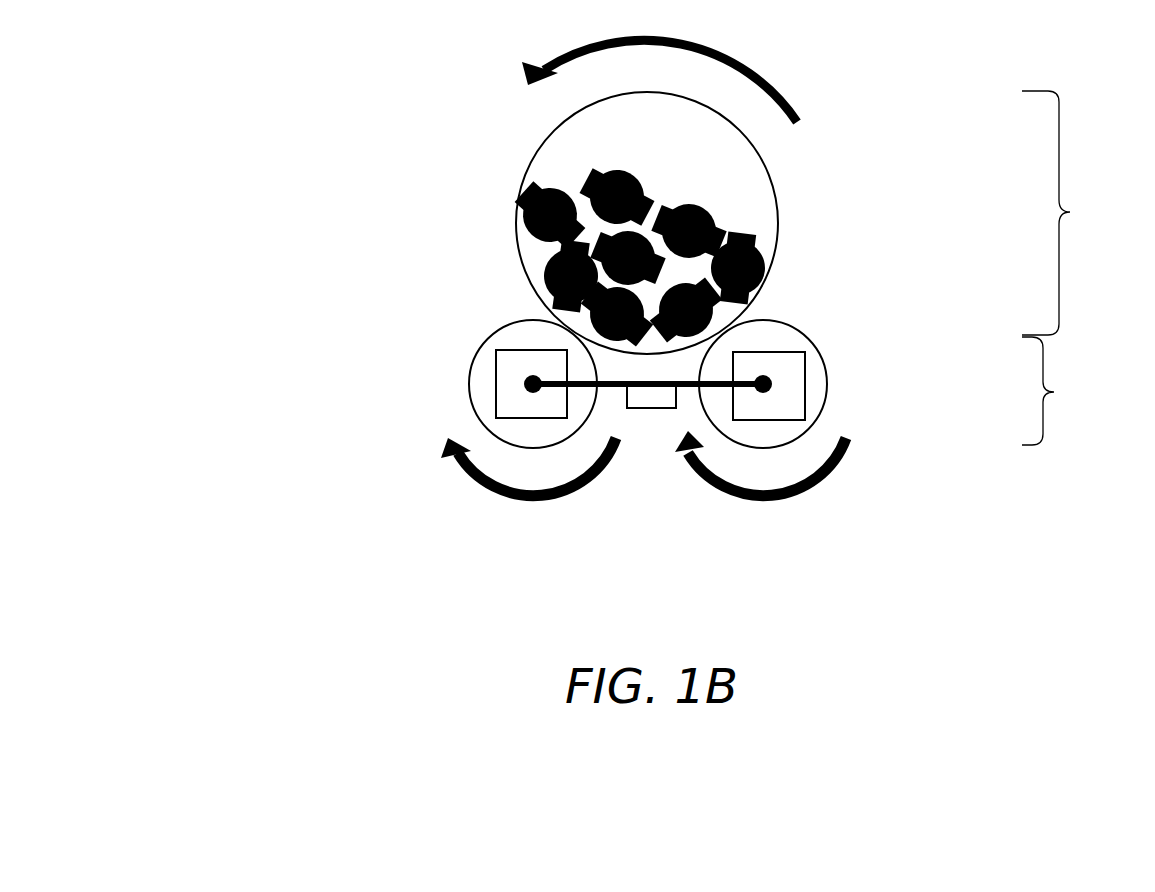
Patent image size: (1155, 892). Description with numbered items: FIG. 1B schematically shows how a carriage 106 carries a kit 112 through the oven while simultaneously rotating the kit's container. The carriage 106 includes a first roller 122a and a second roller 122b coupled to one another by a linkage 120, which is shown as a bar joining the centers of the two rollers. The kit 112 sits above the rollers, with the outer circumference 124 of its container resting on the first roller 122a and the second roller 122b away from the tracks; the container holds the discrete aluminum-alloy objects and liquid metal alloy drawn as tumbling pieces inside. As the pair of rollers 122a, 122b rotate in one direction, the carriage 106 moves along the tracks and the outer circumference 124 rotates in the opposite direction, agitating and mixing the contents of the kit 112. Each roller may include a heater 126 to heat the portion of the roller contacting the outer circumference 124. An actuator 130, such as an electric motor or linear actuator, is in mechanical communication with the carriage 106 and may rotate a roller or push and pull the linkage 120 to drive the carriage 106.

The outer circumference 124 is at (782, 205).
The heater 126 is at (517, 349).
The first roller 122a is at (470, 376).
The second roller 122b is at (822, 362).
The linkage 120 is at (610, 386).
The actuator 130 is at (650, 408).
The kit 112 is at (1070, 212).
The carriage 106 is at (1054, 392).